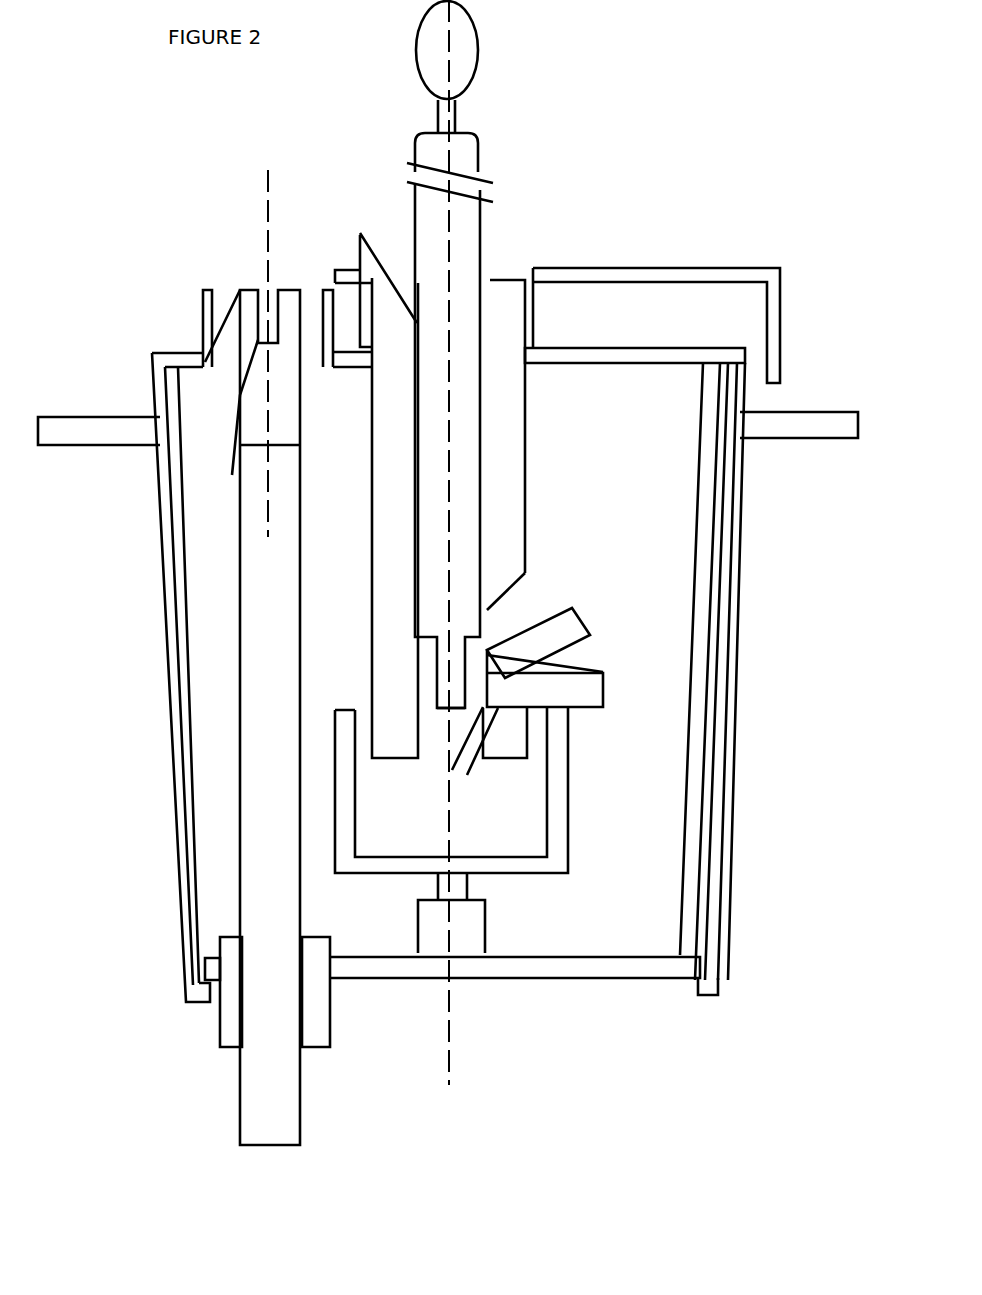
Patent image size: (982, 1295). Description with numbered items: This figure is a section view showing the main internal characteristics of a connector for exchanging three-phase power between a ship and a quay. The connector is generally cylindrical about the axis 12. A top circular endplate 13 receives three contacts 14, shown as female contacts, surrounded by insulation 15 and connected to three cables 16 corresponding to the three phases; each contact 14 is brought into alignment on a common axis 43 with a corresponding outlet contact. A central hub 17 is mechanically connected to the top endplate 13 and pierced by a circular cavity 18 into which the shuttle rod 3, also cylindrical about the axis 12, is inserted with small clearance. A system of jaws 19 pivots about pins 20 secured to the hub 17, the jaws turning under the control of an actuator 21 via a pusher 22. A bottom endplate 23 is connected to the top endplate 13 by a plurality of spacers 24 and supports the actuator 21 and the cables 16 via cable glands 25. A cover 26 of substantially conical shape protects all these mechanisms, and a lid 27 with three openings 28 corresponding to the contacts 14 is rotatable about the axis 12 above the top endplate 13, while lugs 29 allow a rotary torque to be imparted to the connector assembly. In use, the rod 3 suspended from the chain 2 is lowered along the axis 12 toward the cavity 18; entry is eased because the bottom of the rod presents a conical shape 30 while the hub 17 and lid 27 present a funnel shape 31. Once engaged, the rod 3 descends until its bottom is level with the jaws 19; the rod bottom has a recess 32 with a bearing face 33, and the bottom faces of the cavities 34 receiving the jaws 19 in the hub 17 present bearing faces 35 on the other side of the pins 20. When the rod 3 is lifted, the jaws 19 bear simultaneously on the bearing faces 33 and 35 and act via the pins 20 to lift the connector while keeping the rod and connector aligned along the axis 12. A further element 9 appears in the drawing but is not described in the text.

The chain 2 is at (470, 55).
The shuttle rod 3 is at (465, 227).
The tube 9 is at (273, 610).
The axis 12 is at (458, 1080).
The top circular endplate 13 is at (550, 367).
The contacts 14 is at (262, 327).
The insulation 15 is at (232, 395).
The cables 16 is at (570, 630).
The central hub 17 is at (498, 477).
The circular cavity 18 is at (417, 323).
The jaws 19 is at (588, 680).
The pins 20 is at (490, 657).
The actuator 21 is at (458, 915).
The pusher 22 is at (513, 877).
The bottom endplate 23 is at (505, 980).
The spacers 24 is at (698, 810).
The cable glands 25 is at (403, 1040).
The cover 26 is at (182, 855).
The lid 27 is at (573, 270).
The openings 28 is at (287, 277).
The lugs 29 is at (758, 440).
The conical shape 30 is at (528, 808).
The funnel shape 31 is at (482, 317).
The recess 32 is at (437, 658).
The bearing face 33 is at (455, 758).
The cavities 34 is at (503, 615).
The bearing faces 35 is at (528, 708).
The common axis 43 is at (263, 205).